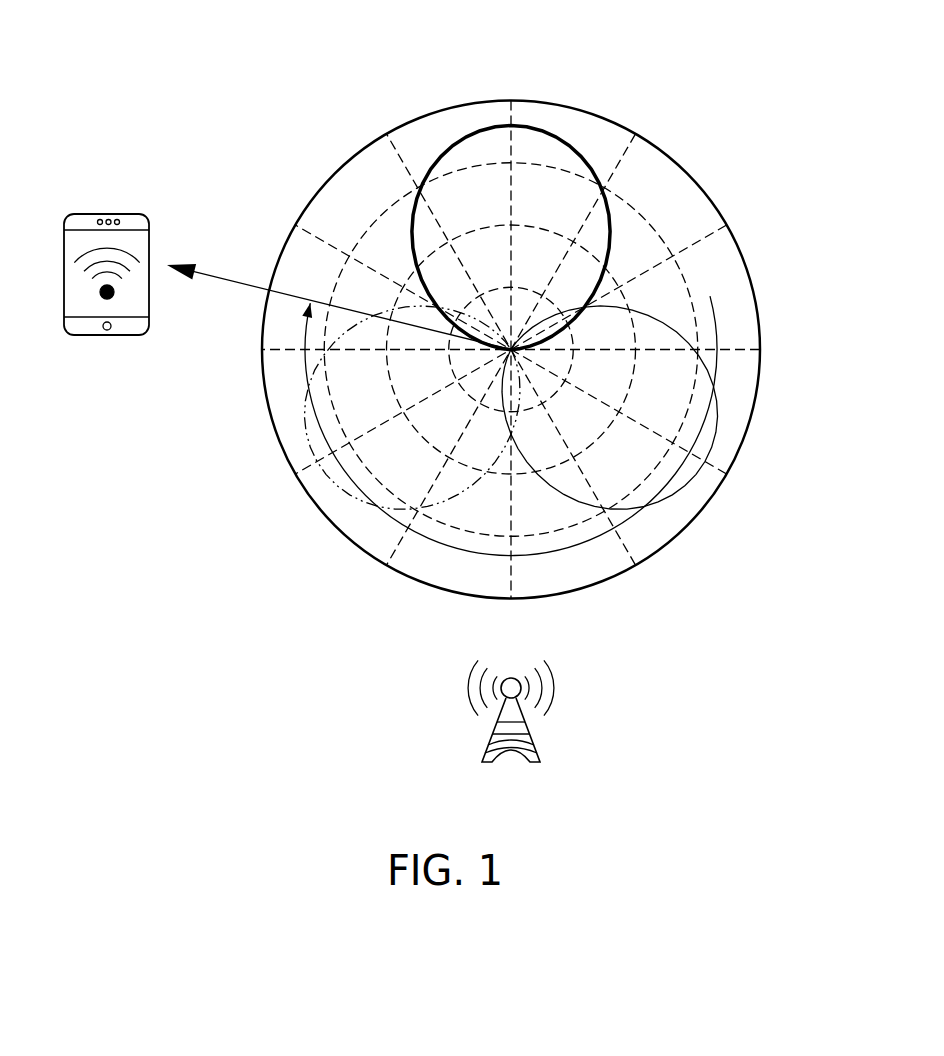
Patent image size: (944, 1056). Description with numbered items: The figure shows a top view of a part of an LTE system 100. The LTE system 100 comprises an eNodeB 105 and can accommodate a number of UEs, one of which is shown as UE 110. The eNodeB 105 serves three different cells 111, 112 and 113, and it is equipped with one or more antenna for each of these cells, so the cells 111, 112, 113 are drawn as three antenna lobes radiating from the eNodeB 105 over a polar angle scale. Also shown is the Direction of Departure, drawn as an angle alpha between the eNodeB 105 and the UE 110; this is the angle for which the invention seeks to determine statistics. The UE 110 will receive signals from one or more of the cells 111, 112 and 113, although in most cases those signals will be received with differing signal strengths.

The LTE system 100 is at (255, 65).
The eNodeB 105 is at (115, 190).
The UE 110 is at (590, 747).
The cell 111 is at (612, 224).
The cell 112 is at (686, 483).
The cell 113 is at (342, 486).